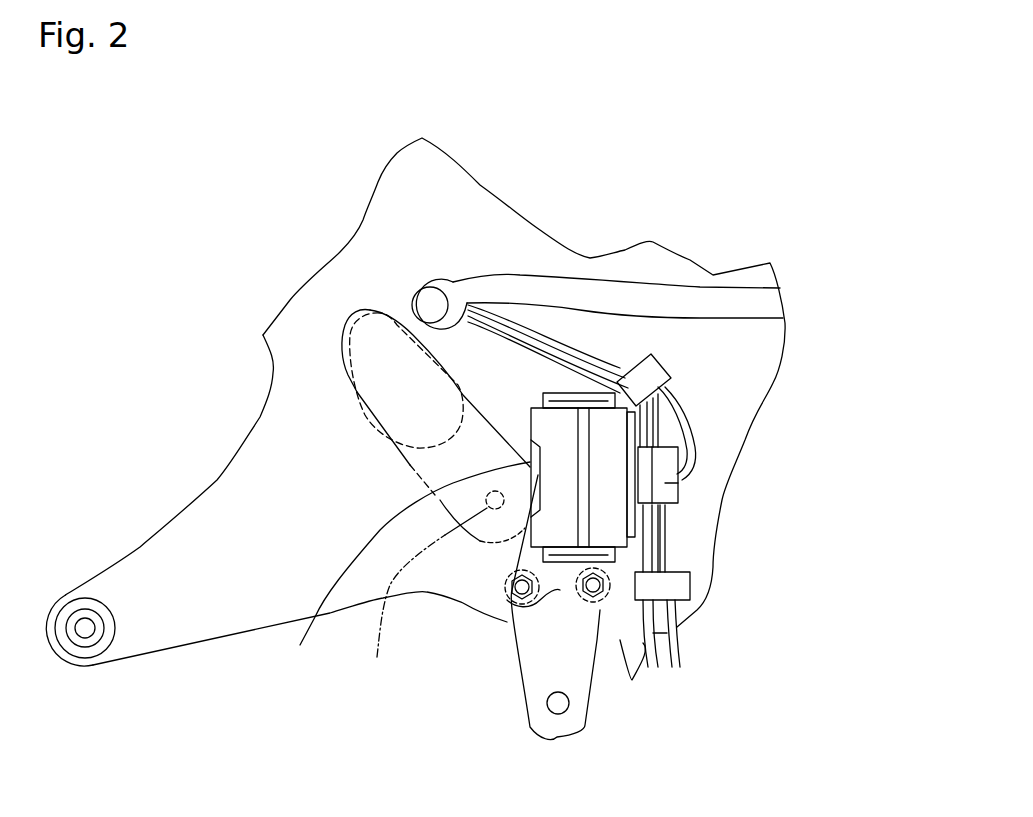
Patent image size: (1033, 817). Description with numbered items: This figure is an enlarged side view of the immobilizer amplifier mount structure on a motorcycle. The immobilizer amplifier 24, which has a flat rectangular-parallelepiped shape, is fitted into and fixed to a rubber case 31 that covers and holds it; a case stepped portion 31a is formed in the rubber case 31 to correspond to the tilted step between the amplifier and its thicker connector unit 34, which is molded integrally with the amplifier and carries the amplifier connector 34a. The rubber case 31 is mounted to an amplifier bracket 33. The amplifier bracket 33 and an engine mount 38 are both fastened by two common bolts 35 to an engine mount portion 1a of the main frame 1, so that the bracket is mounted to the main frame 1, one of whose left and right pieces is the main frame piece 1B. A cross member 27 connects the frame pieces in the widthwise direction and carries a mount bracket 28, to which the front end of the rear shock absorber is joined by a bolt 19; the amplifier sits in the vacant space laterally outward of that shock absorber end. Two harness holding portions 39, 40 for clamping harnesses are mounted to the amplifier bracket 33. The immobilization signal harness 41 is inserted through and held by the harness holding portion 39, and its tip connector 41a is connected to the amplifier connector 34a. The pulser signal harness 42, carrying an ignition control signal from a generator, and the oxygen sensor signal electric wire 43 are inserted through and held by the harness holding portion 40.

The main frame 1 is at (524, 382).
The main frame piece 1B is at (487, 221).
The engine mount portion 1a is at (503, 565).
The bolt 19 is at (424, 593).
The immobilizer amplifier 24 is at (288, 503).
The cross member 27 is at (345, 372).
The mount bracket 28 is at (400, 462).
The rubber case 31 is at (555, 445).
The case stepped portion 31a is at (585, 423).
The amplifier bracket 33 is at (558, 580).
The connector unit 34 is at (630, 522).
The amplifier connector 34a is at (642, 467).
The bolts 35 is at (520, 592).
The engine mount 38 is at (550, 667).
The harness holding portion 39 is at (653, 373).
The harness holding portion 40 is at (673, 590).
The immobilization signal harness 41 is at (688, 428).
The connector 41a is at (665, 483).
The pulser signal harness 42 is at (663, 550).
The oxygen sensor signal electric wire 43 is at (650, 657).